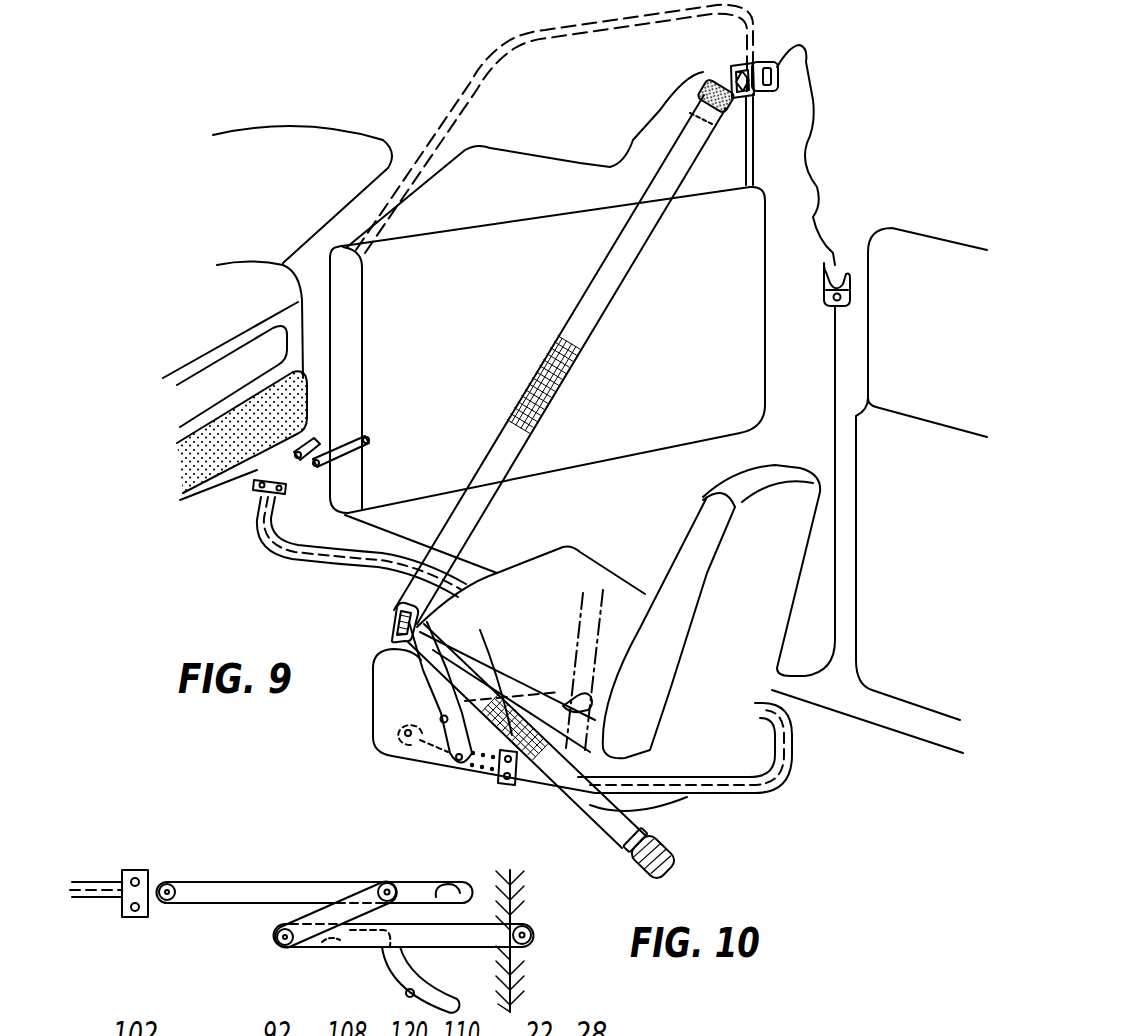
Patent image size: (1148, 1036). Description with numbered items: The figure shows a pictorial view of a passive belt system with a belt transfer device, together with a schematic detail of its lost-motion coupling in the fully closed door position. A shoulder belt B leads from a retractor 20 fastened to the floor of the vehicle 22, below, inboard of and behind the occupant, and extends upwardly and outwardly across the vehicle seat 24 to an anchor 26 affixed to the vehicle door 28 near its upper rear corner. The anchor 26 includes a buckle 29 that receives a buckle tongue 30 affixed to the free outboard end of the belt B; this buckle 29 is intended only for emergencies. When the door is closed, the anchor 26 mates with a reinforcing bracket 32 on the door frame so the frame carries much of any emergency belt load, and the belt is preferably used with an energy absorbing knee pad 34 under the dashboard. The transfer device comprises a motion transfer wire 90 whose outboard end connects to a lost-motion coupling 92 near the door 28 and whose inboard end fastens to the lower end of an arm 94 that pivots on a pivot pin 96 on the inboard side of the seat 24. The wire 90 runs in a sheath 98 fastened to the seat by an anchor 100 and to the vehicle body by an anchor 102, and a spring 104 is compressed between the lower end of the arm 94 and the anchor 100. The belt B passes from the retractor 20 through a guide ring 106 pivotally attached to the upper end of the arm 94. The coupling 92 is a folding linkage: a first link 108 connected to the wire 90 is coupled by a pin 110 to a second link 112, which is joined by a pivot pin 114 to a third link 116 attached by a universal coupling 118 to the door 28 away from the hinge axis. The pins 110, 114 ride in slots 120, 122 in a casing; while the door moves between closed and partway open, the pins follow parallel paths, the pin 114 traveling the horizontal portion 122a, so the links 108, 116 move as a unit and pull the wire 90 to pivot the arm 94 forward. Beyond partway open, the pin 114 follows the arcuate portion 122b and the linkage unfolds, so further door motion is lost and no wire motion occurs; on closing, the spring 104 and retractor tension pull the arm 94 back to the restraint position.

In FIG. 9, the retractor 20 is at (674, 858).
In FIG. 9, the vehicle 22 is at (935, 564).
In FIG. 10, the vehicle 22 is at (509, 996).
In FIG. 9, the vehicle seat 24 is at (745, 654).
In FIG. 9, the anchor 26 is at (784, 70).
In FIG. 9, the vehicle door 28 is at (720, 371).
In FIG. 10, the vehicle door 28 is at (517, 987).
In FIG. 9, the buckle 29 is at (738, 58).
In FIG. 9, the buckle tongue 30 is at (706, 80).
In FIG. 9, the reinforcing bracket 32 is at (821, 249).
In FIG. 9, the energy absorbing knee pad 34 is at (193, 490).
In FIG. 9, the shoulder belt B is at (645, 245).
In FIG. 9, the motion transfer wire 90 is at (285, 463).
In FIG. 10, the motion transfer wire 90 is at (159, 886).
In FIG. 9, the lost-motion coupling 92 is at (346, 446).
In FIG. 10, the lost-motion coupling 92 is at (243, 875).
In FIG. 9, the arm 94 is at (428, 682).
In FIG. 9, the pivot pin 96 is at (441, 719).
In FIG. 9, the sheath 98 is at (772, 778).
In FIG. 10, the sheath 98 is at (87, 898).
In FIG. 9, the anchor 100 is at (510, 783).
In FIG. 9, the anchor 102 is at (262, 497).
In FIG. 10, the anchor 102 is at (147, 850).
In FIG. 9, the spring 104 is at (492, 773).
In FIG. 9, the guide ring 106 is at (390, 617).
In FIG. 10, the first link 108 is at (273, 888).
In FIG. 10, the pin 110 is at (391, 883).
In FIG. 10, the second link 112 is at (341, 918).
In FIG. 10, the pivot pin 114 is at (278, 938).
In FIG. 10, the third link 116 is at (480, 946).
In FIG. 10, the universal coupling 118 is at (529, 931).
In FIG. 10, the slot 120 is at (451, 886).
In FIG. 10, the slot 122 is at (404, 1000).
In FIG. 10, the horizontal portion 122a is at (300, 956).
In FIG. 10, the arcuate portion 122b is at (418, 1000).